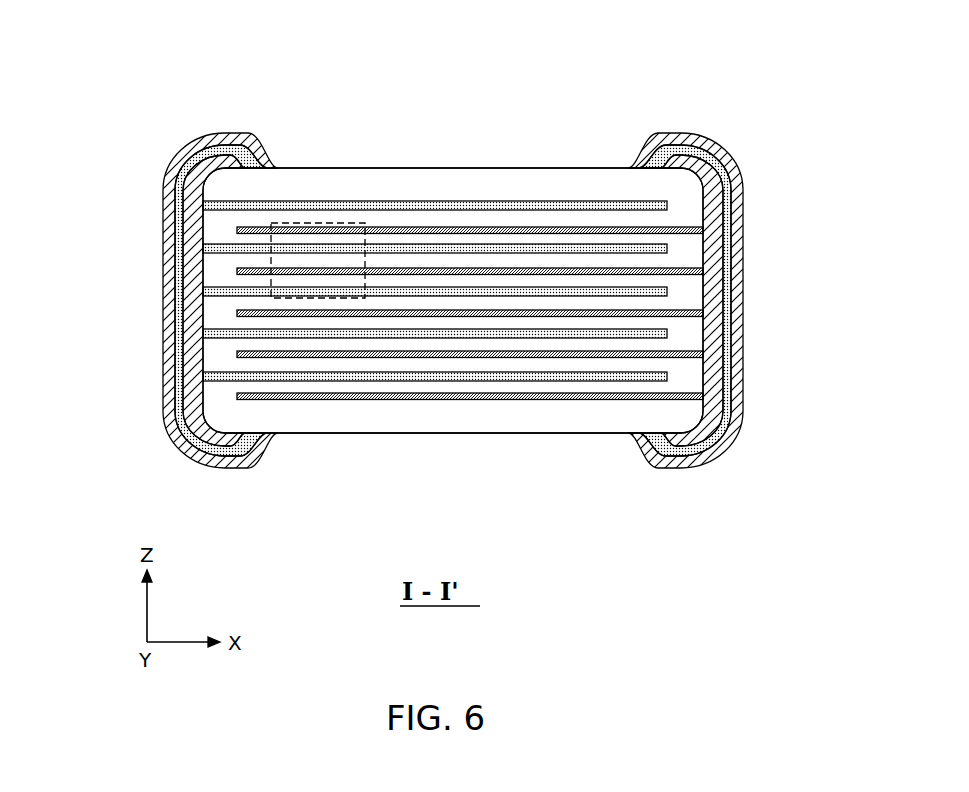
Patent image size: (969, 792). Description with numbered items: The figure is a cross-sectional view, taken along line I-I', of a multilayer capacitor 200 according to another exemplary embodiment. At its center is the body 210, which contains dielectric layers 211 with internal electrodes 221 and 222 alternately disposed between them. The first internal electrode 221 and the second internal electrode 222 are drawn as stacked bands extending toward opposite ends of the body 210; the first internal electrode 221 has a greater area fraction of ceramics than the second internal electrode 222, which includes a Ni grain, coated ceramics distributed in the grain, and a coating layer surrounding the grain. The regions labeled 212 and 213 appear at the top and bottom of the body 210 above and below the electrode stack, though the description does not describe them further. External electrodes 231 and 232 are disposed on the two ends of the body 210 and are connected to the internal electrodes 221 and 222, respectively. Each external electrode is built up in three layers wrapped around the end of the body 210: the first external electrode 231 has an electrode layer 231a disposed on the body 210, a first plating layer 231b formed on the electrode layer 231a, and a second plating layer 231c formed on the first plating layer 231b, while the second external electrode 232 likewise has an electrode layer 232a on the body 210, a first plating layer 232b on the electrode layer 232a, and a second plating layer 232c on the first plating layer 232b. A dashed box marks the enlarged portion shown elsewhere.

The multilayer capacitor 200 is at (212, 34).
The body 210 is at (345, 168).
The dielectric layers 211 is at (704, 240).
The upper cover portion 212 is at (553, 175).
The lower cover portion 213 is at (502, 426).
The first internal electrode 221 is at (414, 204).
The second internal electrode 222 is at (481, 227).
The external electrode 231 is at (78, 250).
The electrode layer 231a is at (190, 265).
The first plating layer 231b is at (178, 310).
The second plating layer 231c is at (168, 350).
The external electrode 232 is at (848, 262).
The electrode layer 232a is at (710, 272).
The first plating layer 232b is at (727, 310).
The second plating layer 232c is at (737, 350).